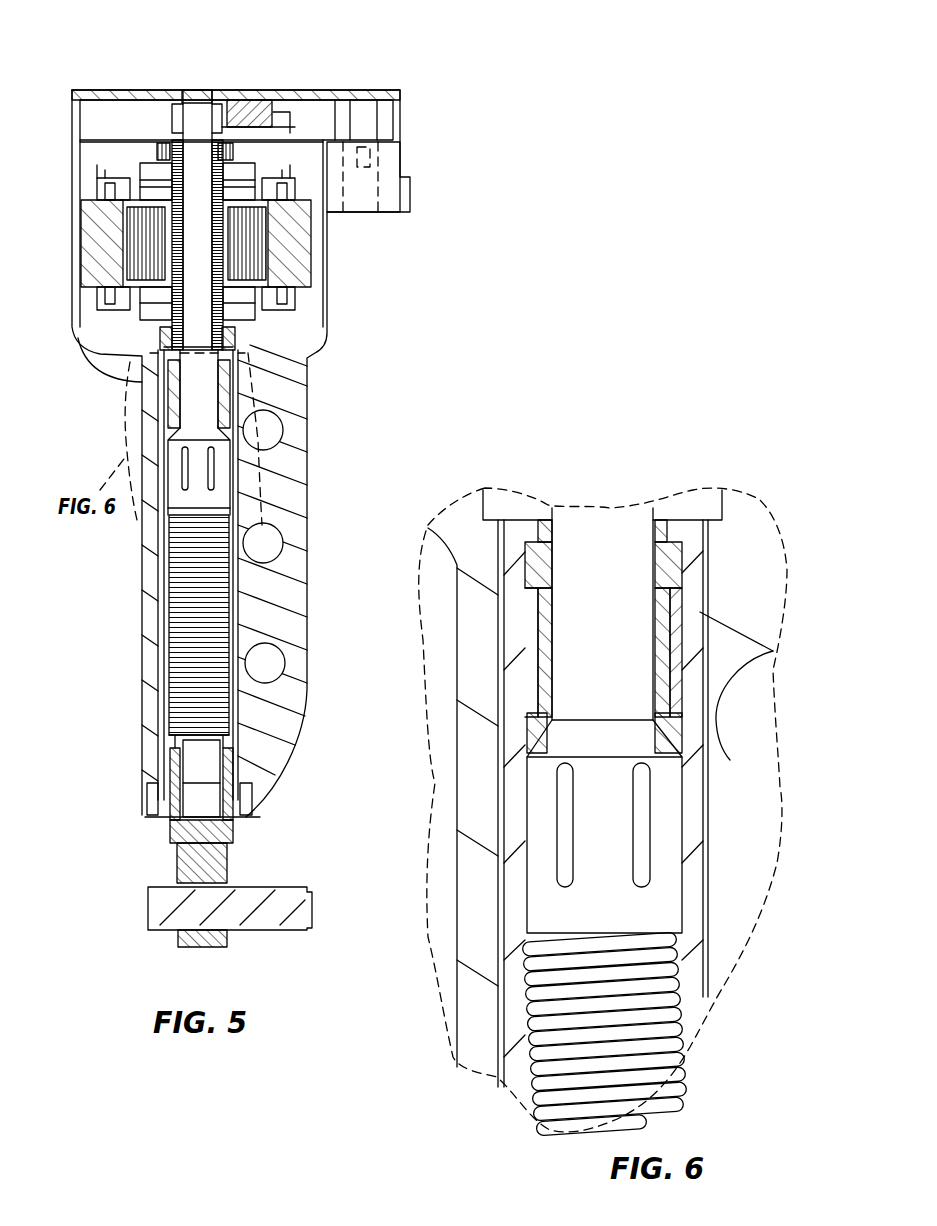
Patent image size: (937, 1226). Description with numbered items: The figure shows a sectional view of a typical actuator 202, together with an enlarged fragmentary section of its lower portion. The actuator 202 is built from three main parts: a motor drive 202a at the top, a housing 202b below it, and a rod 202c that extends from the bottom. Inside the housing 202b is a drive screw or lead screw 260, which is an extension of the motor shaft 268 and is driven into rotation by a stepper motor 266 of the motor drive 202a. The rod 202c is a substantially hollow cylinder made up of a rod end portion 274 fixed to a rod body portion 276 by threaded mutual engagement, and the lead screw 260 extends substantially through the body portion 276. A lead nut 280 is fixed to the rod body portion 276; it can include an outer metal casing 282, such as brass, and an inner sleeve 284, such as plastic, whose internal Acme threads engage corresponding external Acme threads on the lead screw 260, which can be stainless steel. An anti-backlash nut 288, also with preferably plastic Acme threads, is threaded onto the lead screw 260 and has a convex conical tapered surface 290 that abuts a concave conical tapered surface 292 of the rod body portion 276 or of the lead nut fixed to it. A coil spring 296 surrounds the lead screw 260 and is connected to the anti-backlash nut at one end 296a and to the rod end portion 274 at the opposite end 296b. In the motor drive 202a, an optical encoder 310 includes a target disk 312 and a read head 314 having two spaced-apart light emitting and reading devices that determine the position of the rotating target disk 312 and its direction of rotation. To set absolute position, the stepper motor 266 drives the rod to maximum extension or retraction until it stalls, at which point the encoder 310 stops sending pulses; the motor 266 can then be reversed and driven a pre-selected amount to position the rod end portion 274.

In FIG. 5, the actuator 202 is at (353, 307).
In FIG. 5, the motor drive 202a is at (410, 150).
In FIG. 5, the housing 202b is at (310, 463).
In FIG. 5, the rod 202c is at (233, 860).
In FIG. 5, the lead screw 260 is at (197, 765).
In FIG. 6, the lead screw 260 is at (710, 510).
In FIG. 5, the stepper motor 266 is at (95, 237).
In FIG. 5, the motor shaft 268 is at (193, 207).
In FIG. 5, the rod end portion 274 is at (175, 845).
In FIG. 5, the rod body portion 276 is at (237, 694).
In FIG. 6, the rod body portion 276 is at (693, 907).
In FIG. 6, the lead nut 280 is at (673, 634).
In FIG. 6, the outer metal casing 282 is at (645, 656).
In FIG. 6, the inner sleeve 284 is at (650, 657).
In FIG. 6, the anti-backlash nut 288 is at (663, 858).
In FIG. 6, the convex conical tapered surface 290 is at (640, 737).
In FIG. 6, the concave conical tapered surface 292 is at (663, 733).
In FIG. 5, the coil spring 296 is at (180, 610).
In FIG. 6, the coil spring 296 is at (533, 950).
In FIG. 5, the coil spring end 296a is at (235, 536).
In FIG. 5, the coil spring opposite end 296b is at (233, 747).
In FIG. 5, the optical encoder 310 is at (173, 127).
In FIG. 5, the target disk 312 is at (178, 140).
In FIG. 5, the read head 314 is at (247, 107).